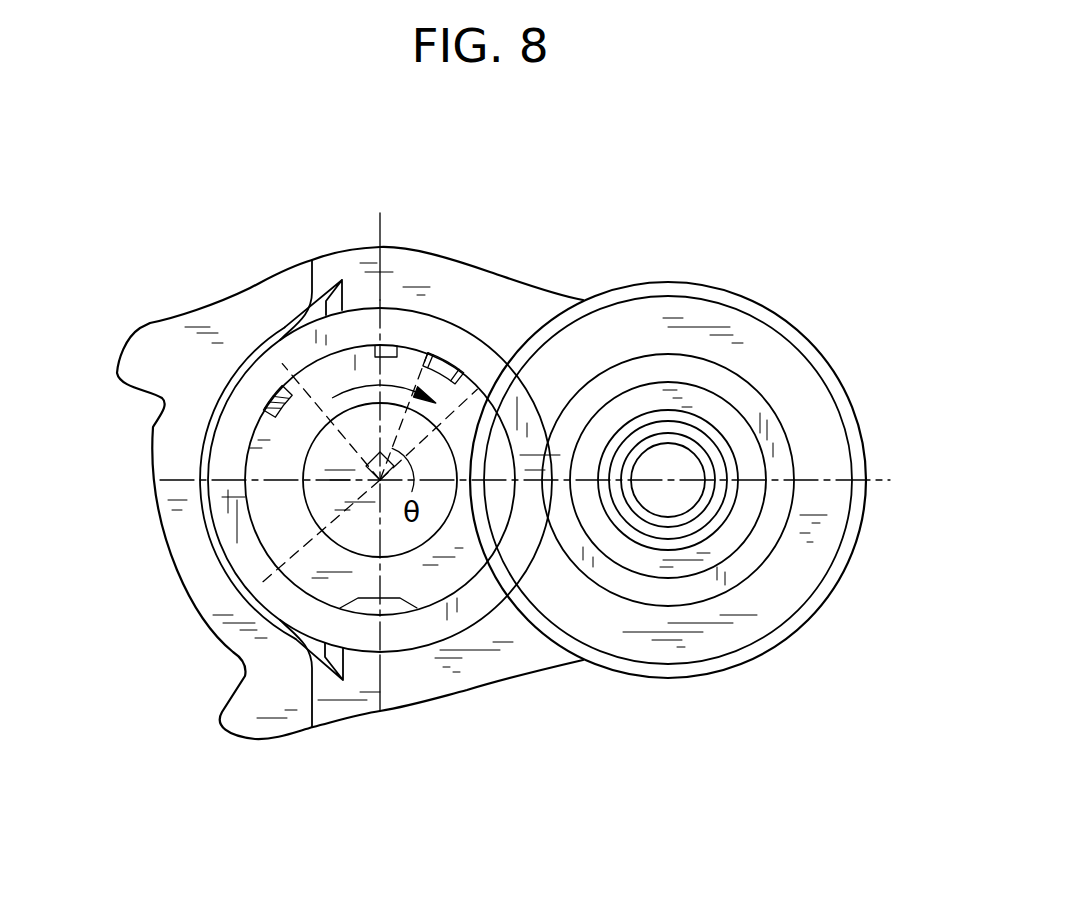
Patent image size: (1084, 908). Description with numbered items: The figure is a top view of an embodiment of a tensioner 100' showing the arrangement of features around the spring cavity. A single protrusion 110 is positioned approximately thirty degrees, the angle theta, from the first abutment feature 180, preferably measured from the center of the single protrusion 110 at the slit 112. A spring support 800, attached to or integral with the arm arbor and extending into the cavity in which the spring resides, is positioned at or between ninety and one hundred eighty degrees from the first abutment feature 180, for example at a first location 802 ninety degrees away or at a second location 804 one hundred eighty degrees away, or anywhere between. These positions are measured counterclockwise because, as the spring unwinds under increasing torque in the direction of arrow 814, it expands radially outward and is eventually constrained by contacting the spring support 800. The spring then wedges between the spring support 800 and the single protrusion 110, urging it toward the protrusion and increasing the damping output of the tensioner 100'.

The tensioner 100' is at (350, 431).
The single protrusion 110 is at (448, 368).
The slit 112 is at (425, 353).
The first abutment feature 180 is at (482, 396).
The spring support 800 is at (268, 400).
The first location 802 is at (283, 364).
The second location 804 is at (280, 567).
The arrow 814 is at (383, 388).